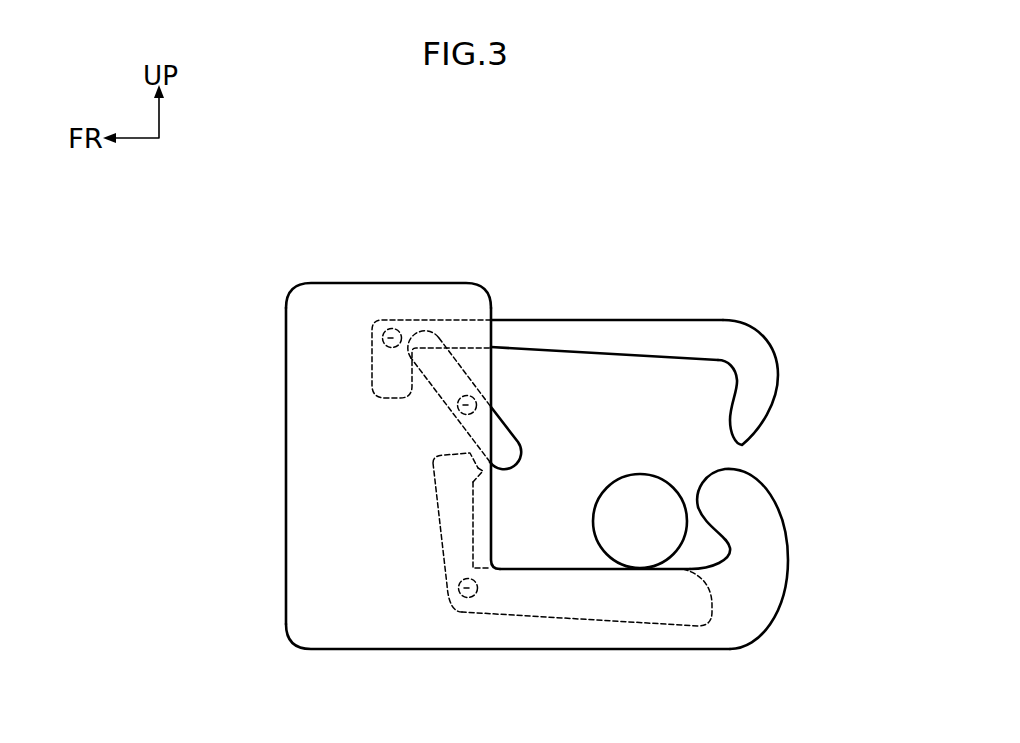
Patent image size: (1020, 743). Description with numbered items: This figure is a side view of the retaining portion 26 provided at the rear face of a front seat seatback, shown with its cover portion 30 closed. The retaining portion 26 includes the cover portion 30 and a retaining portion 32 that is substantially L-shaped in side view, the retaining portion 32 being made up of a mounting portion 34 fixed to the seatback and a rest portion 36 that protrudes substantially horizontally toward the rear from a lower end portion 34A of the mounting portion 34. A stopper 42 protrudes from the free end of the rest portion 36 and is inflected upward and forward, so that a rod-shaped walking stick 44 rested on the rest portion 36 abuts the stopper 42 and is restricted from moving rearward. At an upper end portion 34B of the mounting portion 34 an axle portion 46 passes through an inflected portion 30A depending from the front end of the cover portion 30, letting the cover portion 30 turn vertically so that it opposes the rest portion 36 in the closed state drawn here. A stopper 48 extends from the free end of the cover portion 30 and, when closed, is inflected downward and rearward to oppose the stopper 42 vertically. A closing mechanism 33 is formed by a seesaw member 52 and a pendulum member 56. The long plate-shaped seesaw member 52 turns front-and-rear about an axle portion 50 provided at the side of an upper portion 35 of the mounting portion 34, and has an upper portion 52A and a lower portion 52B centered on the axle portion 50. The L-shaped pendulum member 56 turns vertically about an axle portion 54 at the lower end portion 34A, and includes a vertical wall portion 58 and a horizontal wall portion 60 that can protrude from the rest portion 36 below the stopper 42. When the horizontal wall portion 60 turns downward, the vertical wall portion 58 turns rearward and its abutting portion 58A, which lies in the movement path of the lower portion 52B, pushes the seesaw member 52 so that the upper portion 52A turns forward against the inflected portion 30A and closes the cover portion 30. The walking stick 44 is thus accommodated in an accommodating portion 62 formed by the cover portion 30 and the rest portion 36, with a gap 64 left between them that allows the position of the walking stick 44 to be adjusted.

The retaining portion 26 is at (264, 246).
The cover portion 30 is at (576, 309).
The inflected portion 30A is at (372, 380).
The retaining portion 32 is at (247, 494).
The closing mechanism 33 is at (593, 426).
The mounting portion 34 is at (300, 566).
The lower end portion 34A is at (343, 620).
The upper end portion 34B is at (380, 297).
The upper portion 35 is at (313, 412).
The rest portion 36 is at (598, 638).
The stopper 42 is at (762, 517).
The walking stick 44 is at (650, 485).
The axle portion 46 is at (372, 337).
The stopper 48 is at (755, 381).
The axle portion 50 is at (495, 412).
The seesaw member 52 is at (421, 401).
The upper portion 52A is at (450, 355).
The lower portion 52B is at (503, 452).
The axle portion 54 is at (470, 598).
The pendulum member 56 is at (547, 625).
The vertical wall portion 58 is at (460, 525).
The abutting portion 58A is at (490, 483).
The horizontal wall portion 60 is at (672, 608).
The accommodating portion 62 is at (623, 397).
The gap 64 is at (665, 396).